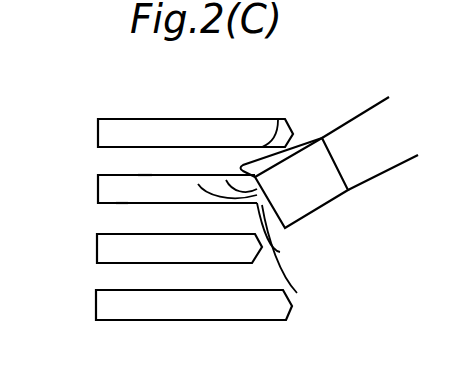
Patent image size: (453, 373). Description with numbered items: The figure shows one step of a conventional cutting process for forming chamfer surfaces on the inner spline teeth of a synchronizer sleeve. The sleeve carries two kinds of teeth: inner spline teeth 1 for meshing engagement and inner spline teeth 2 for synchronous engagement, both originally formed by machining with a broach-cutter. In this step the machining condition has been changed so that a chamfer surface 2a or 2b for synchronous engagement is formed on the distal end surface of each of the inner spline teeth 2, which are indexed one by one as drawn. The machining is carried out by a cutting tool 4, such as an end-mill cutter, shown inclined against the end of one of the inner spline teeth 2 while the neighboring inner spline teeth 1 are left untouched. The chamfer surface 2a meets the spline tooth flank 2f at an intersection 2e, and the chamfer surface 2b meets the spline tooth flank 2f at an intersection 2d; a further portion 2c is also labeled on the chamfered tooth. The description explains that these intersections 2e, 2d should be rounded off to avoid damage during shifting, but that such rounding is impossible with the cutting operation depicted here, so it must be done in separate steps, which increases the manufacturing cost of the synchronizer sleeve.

The inner spline teeth for meshing engagement 1 is at (287, 137).
The inner spline teeth for synchronous engagement 2 is at (256, 248).
The chamfer surface for synchronous engagement 2a is at (226, 180).
The chamfer surface for synchronous engagement 2b is at (280, 252).
The bent portion of lead 2c is at (198, 184).
The intersection of chamfer surface and spline tooth flank 2d is at (297, 293).
The intersection of chamfer surface and spline tooth flank 2e is at (278, 120).
The spline tooth flank 2f is at (72, 219).
The cutting tool 4 is at (348, 145).